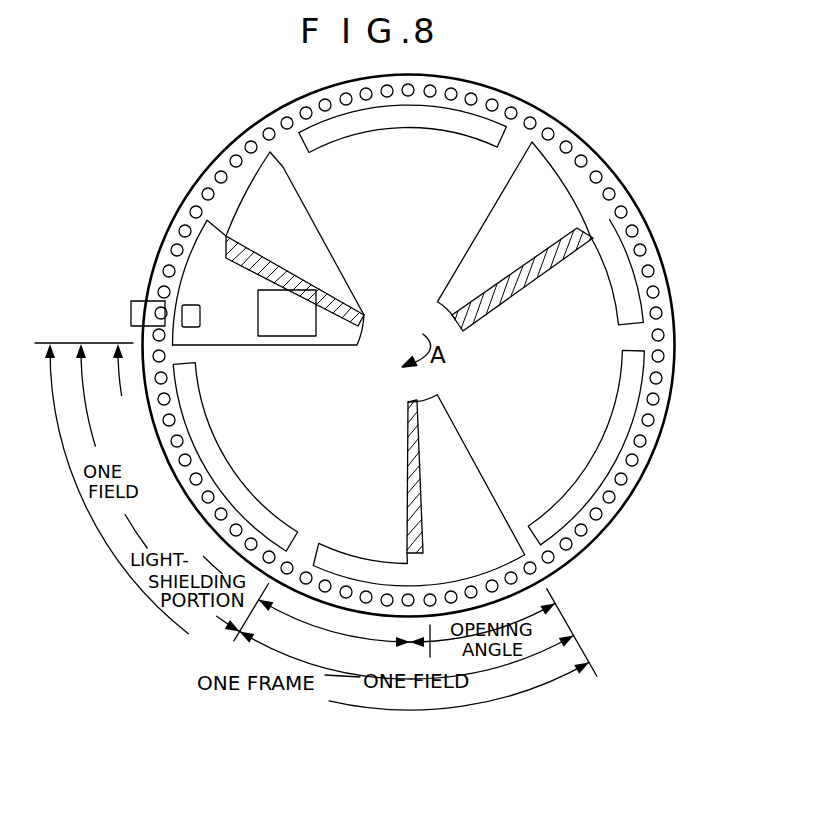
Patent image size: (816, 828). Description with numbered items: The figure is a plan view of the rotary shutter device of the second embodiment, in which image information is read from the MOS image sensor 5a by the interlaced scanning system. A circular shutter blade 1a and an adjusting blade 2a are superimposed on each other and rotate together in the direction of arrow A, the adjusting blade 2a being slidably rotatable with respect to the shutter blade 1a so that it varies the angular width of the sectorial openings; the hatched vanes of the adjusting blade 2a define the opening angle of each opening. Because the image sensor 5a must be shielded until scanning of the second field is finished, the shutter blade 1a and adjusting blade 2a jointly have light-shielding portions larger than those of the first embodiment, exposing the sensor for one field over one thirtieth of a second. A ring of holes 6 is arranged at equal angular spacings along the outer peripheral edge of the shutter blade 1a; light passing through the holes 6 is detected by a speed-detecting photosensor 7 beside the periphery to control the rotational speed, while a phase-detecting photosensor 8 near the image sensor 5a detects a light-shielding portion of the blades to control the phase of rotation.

The shutter blade 1a is at (587, 282).
The adjusting blade 2a is at (278, 266).
The MOS image sensor 5a is at (290, 337).
The holes 6 is at (573, 155).
The speed-detecting photosensor 7 is at (133, 303).
The phase-detecting photosensor 8 is at (197, 304).